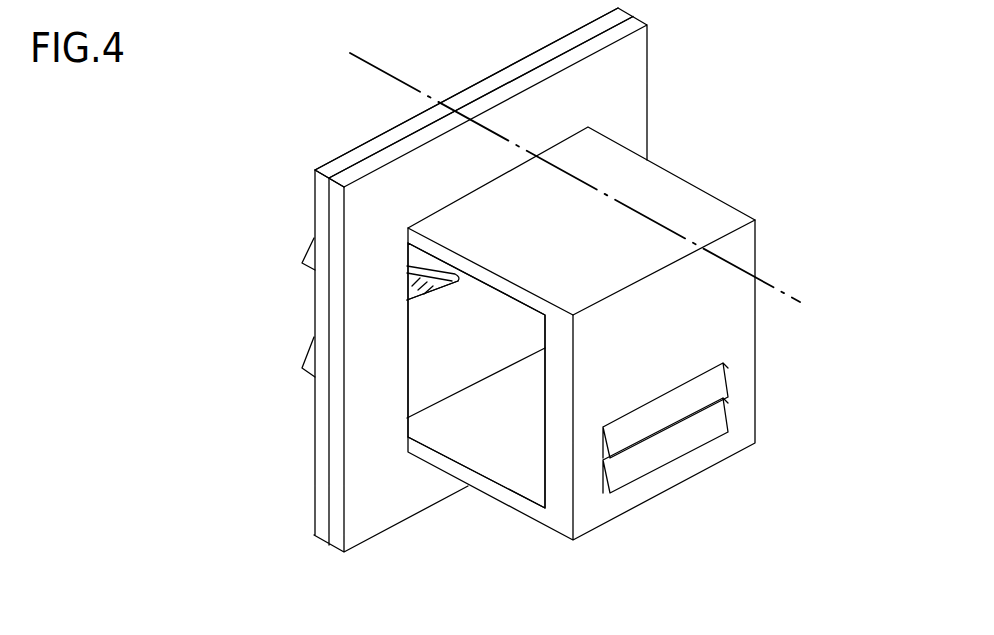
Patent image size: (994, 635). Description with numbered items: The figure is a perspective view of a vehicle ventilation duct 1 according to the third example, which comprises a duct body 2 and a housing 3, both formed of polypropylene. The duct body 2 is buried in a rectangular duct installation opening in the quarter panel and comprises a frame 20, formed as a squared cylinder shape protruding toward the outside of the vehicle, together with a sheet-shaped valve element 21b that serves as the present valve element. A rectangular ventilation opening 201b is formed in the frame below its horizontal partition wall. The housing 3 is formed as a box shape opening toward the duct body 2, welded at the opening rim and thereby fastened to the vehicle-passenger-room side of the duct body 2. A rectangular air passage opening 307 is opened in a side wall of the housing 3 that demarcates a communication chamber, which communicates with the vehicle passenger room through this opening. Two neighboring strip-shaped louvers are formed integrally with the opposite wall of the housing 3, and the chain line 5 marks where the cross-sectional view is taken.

The ventilation duct 1 is at (524, 281).
The duct body 2 is at (479, 280).
The housing 3 is at (625, 341).
The chain line 5- 5 is at (577, 177).
The frame 20 is at (337, 168).
The sheet-shaped valve element 21b is at (407, 290).
The ventilation opening 201b is at (420, 297).
The air passage opening 307 is at (500, 458).